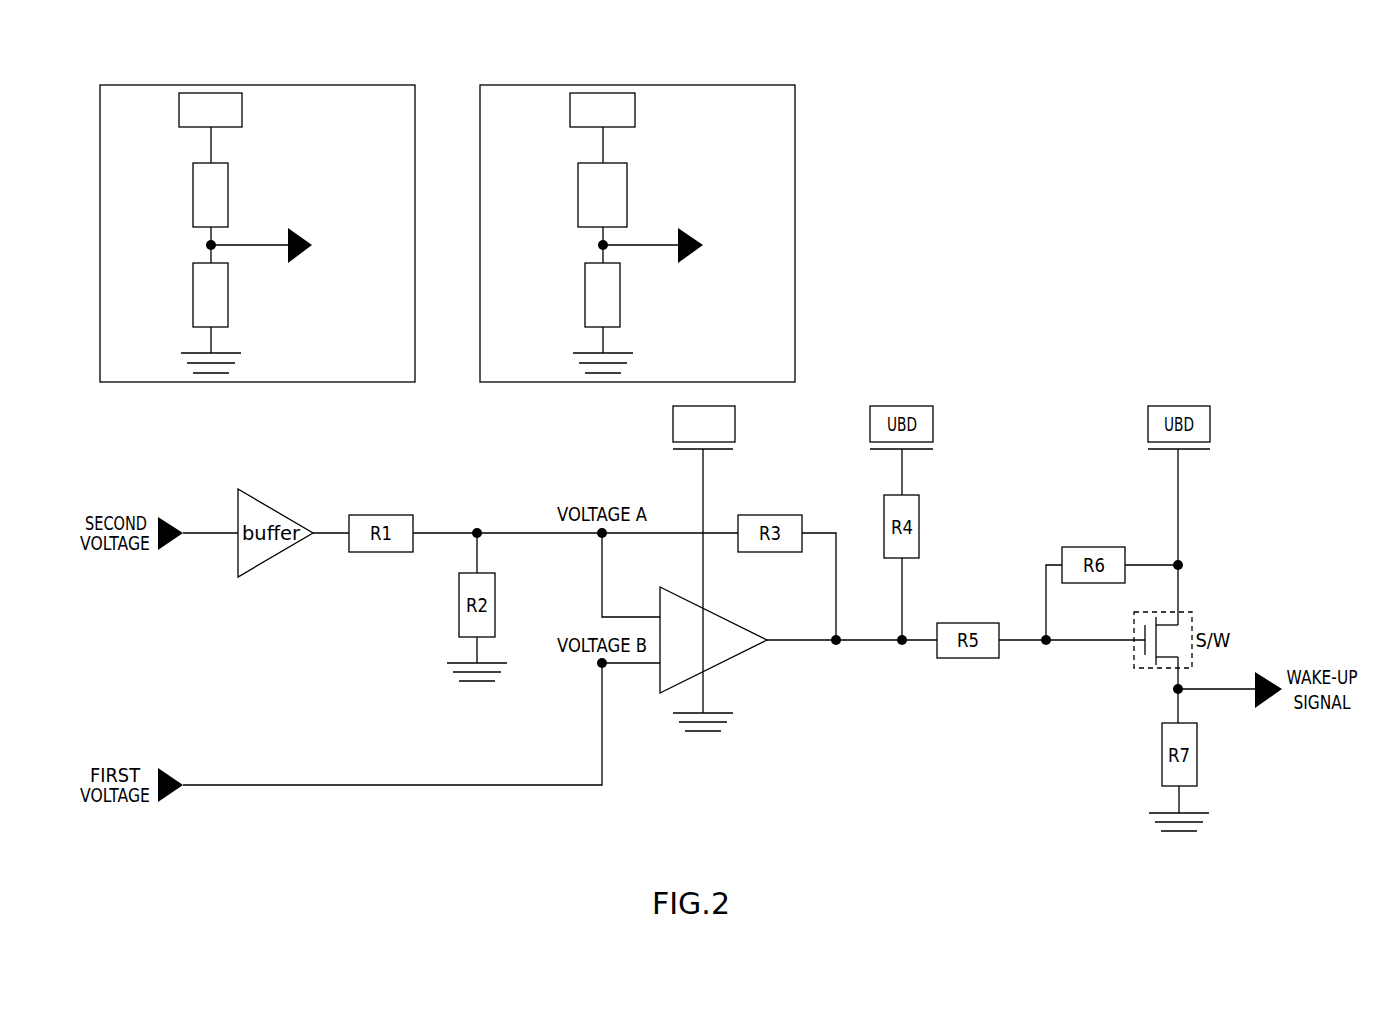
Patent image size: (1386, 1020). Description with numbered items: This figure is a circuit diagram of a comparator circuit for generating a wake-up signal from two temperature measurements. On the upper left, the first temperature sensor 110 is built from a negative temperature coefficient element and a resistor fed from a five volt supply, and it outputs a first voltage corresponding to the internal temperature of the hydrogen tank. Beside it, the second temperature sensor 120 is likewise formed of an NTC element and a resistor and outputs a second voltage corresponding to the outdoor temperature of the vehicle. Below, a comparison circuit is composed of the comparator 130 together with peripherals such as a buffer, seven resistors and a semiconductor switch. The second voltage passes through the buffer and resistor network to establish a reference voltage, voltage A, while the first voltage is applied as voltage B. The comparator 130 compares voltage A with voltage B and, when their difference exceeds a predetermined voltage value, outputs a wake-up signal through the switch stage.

The first temperature sensor 110 is at (256, 85).
The second temperature sensor 120 is at (636, 85).
The comparator 130 is at (727, 618).